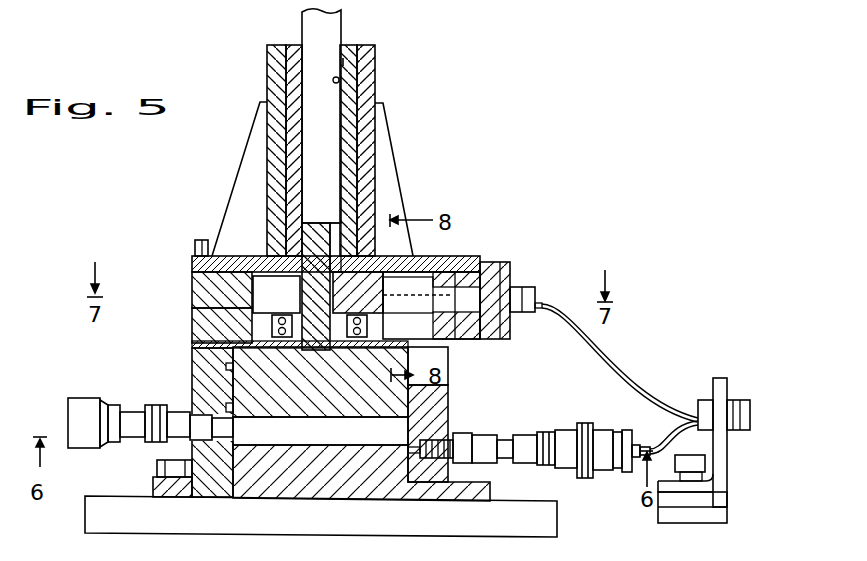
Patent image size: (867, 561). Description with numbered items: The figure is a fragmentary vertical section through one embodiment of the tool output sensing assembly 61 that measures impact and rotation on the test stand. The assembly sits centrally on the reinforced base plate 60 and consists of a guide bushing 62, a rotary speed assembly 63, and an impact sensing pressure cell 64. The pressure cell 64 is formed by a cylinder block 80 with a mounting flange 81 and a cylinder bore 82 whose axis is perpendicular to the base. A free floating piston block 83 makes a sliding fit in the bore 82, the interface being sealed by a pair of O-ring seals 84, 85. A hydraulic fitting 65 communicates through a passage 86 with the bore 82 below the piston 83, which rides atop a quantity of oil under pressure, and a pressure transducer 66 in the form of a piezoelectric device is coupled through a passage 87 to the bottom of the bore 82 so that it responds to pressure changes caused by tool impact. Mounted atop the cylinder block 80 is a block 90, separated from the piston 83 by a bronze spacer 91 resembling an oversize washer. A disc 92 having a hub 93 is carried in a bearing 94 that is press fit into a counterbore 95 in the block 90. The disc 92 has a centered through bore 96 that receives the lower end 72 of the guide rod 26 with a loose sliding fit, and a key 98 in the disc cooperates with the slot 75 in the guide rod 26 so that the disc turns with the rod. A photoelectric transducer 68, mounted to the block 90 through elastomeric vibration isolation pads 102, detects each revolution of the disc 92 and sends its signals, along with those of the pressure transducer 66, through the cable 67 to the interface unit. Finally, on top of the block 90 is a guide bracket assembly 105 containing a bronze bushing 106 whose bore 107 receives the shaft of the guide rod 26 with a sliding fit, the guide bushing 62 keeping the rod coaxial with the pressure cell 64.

The guide rod 26 is at (335, 28).
The guide bracket assembly 105 is at (375, 127).
The bronze bushing 106 is at (348, 61).
The bore 107 is at (339, 80).
The guide bushing 62 is at (406, 184).
The tool output sensing assembly 61 is at (184, 217).
The rotary speed assembly 63 is at (184, 308).
The block 90 is at (192, 325).
The disc 92 is at (253, 292).
The bronze spacer 91 is at (222, 325).
The lower end of guide rod 72 is at (308, 247).
The slot 75 is at (333, 243).
The through bore 96 is at (302, 297).
The key 98 is at (352, 281).
The counterbore 95 is at (368, 330).
The elastomeric vibration isolation pads 102 is at (472, 262).
The transducer 68 is at (531, 287).
The cable 67 is at (746, 410).
The impact sensing pressure cell 64 is at (184, 377).
The hub 93 is at (305, 392).
The free floating piston block 83 is at (320, 382).
The bearing 94 is at (358, 340).
The cylinder bore 82 is at (237, 438).
The O-ring seal 84 is at (448, 355).
The cylinder block 80 is at (448, 375).
The passage 86 is at (321, 473).
The mounting flange 81 is at (153, 483).
The hydraulic fitting 65 is at (122, 408).
The O-ring seal 85 is at (448, 407).
The pressure transducer 66 is at (502, 440).
The passage 87 is at (403, 447).
The base plate 60 is at (488, 530).